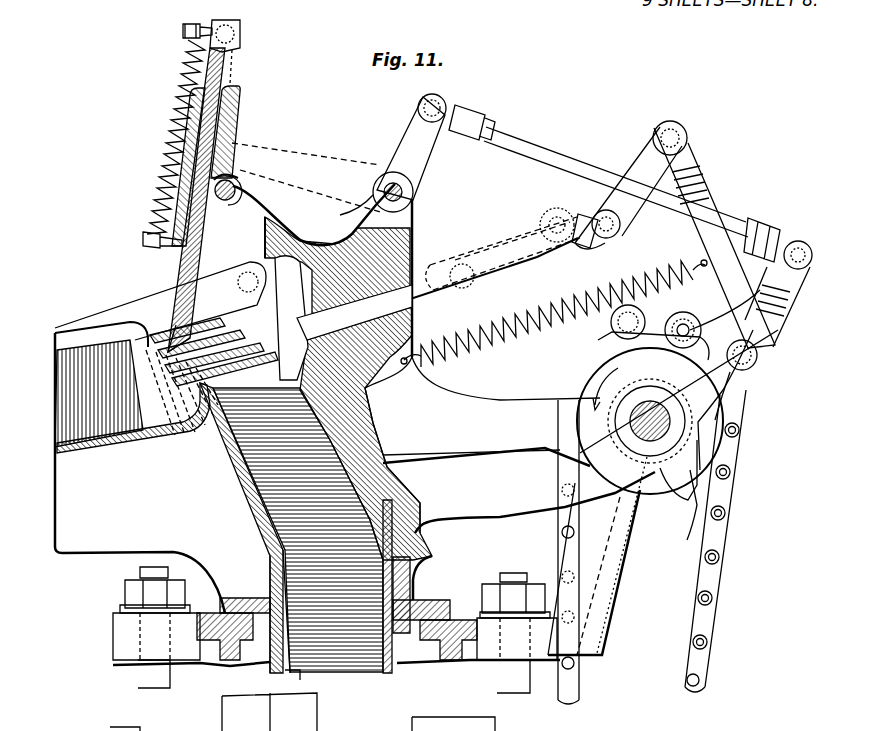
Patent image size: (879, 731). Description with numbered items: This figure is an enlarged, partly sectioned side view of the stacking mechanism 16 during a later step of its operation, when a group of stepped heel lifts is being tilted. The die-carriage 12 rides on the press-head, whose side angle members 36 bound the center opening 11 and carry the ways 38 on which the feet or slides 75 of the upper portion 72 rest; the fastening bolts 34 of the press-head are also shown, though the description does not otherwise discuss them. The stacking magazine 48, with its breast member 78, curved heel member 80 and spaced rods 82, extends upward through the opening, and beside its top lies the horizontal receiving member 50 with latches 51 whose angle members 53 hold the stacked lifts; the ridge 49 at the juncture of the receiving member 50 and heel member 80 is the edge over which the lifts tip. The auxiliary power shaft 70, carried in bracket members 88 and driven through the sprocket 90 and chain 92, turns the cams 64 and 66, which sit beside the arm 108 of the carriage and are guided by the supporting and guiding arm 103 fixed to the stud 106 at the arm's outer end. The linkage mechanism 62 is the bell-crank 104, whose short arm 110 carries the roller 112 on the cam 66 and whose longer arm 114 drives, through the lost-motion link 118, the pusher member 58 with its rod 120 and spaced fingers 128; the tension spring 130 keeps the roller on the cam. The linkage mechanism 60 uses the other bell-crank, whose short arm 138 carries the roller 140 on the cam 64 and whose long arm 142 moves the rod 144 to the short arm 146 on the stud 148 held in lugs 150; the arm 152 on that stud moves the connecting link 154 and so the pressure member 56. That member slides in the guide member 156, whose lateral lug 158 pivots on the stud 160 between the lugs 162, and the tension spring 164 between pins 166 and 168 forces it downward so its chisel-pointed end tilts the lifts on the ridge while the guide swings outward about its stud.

The longitudinal center opening 11 is at (302, 701).
The die-carriage 12 is at (440, 605).
The stacking mechanism 16 is at (616, 173).
The bolt 34 is at (140, 680).
The side angle members 36 is at (215, 672).
The ways 38 is at (212, 612).
The stacking magazine 48 is at (383, 598).
The edge or ridge 49 is at (185, 432).
The receiving member 50 is at (106, 446).
The latches 51 is at (160, 301).
The angle members 53 is at (110, 330).
The pressure member 56 is at (178, 280).
The pusher member 58 is at (350, 314).
The linkage mechanism 60 is at (472, 110).
The linkage mechanism 62 is at (592, 222).
The cam 64 is at (600, 370).
The cam 66 is at (592, 392).
The auxiliary power shaft 70 is at (665, 500).
The upper portion 72 is at (392, 445).
The feet or slides 75 is at (240, 598).
The breast member 78 is at (420, 568).
The heel member 80 is at (274, 622).
The rods 82 is at (300, 680).
The bracket members 88 is at (614, 578).
The sprocket 90 is at (684, 513).
The chain 92 is at (742, 456).
The supporting and guiding arm 103 is at (712, 405).
The bell-crank 104 is at (728, 272).
The stud 106 is at (760, 360).
The arm 108 is at (519, 445).
The short arm 110 is at (742, 382).
The roller 112 is at (735, 245).
The longer arm 114 is at (695, 172).
The lost-motion link 118 is at (496, 242).
The rod 120 is at (493, 262).
The fingers 128 is at (285, 308).
The tension spring 130 is at (554, 313).
The short arm 138 is at (668, 318).
The roller 140 is at (611, 322).
The long arm 142 is at (786, 290).
The rod 144 is at (590, 170).
The short arm 146 is at (422, 152).
The stud 148 is at (414, 195).
The lugs 150 is at (413, 213).
The arm 152 is at (338, 172).
The connecting link 154 is at (240, 77).
The guide member 156 is at (185, 128).
The laterally extending lug 158 is at (256, 194).
The stud 160 is at (230, 182).
The upwardly extending lugs 162 is at (246, 187).
The tension spring 164 is at (180, 76).
The pin 166 is at (180, 31).
The pin 168 is at (142, 240).